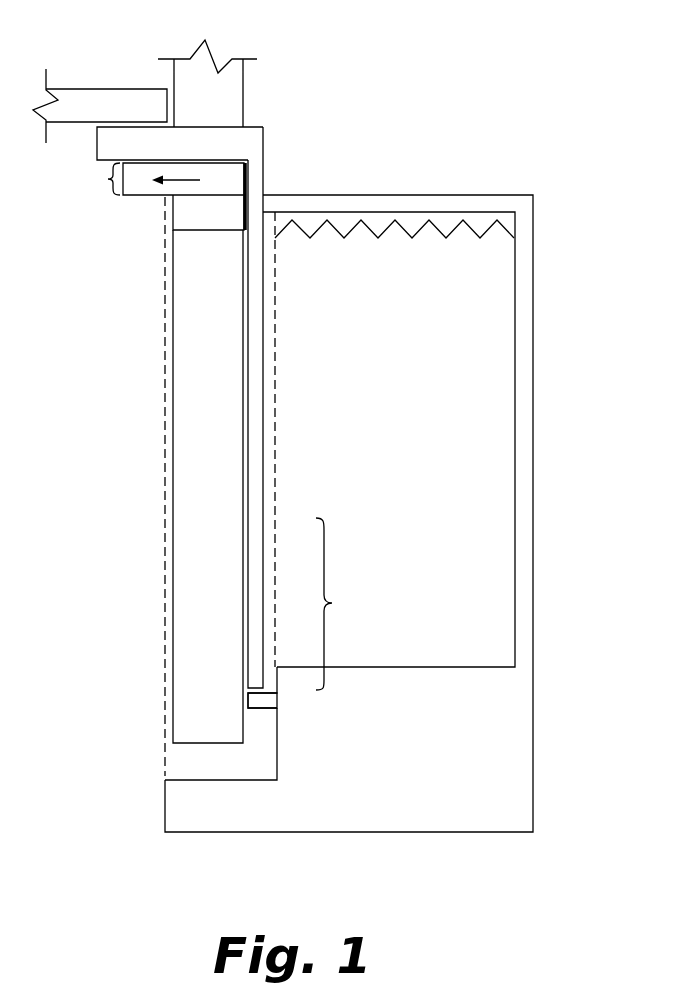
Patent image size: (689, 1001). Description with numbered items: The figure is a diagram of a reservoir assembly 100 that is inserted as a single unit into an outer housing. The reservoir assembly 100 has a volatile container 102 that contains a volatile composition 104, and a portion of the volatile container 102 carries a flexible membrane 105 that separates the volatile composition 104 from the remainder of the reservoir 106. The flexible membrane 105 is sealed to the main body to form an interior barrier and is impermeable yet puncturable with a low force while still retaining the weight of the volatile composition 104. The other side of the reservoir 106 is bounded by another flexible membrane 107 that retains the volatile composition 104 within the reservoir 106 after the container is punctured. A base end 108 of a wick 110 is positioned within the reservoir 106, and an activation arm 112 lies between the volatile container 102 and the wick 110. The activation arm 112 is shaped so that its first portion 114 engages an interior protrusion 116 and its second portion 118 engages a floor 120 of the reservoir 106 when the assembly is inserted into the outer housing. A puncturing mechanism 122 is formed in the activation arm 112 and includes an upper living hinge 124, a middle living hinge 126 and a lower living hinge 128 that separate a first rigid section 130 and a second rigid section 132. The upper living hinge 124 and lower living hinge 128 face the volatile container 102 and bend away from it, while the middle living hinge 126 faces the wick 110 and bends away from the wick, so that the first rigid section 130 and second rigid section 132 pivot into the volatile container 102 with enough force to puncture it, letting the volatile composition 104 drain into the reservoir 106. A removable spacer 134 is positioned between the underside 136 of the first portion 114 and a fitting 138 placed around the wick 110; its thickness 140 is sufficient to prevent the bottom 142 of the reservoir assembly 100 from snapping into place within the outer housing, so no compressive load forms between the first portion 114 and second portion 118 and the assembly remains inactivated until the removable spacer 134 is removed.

The reservoir assembly 100 is at (453, 77).
The volatile container 102 is at (488, 315).
The volatile composition 104 is at (406, 405).
The flexible membrane 105 is at (277, 333).
The reservoir 106 is at (197, 770).
The flexible membrane 107 is at (166, 405).
The base end 108 is at (107, 624).
The wick 110 is at (226, 365).
The activation arm 112 is at (253, 178).
The first portion 114 is at (239, 364).
The interior protrusion 116 is at (97, 106).
The second portion 118 is at (289, 723).
The floor 120 is at (268, 694).
The puncturing mechanism 122 is at (280, 576).
The upper living hinge 124 is at (257, 530).
The middle living hinge 126 is at (249, 595).
The lower living hinge 128 is at (259, 661).
The first rigid section 130 is at (258, 626).
The second rigid section 132 is at (250, 557).
The removable spacer 134 is at (217, 178).
The underside 136 is at (230, 163).
The fitting 138 is at (190, 222).
The thickness 140 is at (158, 179).
The bottom 142 is at (165, 862).